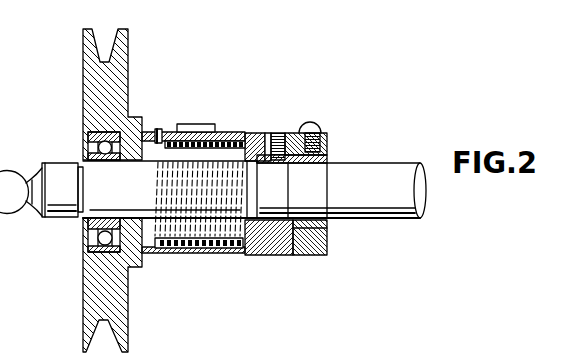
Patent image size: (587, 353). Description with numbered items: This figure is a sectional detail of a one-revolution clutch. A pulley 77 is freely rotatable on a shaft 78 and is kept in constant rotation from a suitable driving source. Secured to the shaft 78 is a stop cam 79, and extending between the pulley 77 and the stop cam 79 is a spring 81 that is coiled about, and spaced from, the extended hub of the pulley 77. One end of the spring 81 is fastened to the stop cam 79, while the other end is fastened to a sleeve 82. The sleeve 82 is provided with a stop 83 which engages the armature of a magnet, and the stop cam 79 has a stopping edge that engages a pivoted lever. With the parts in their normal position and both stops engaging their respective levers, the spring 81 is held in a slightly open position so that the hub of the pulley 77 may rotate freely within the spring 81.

The pulley 77 is at (124, 82).
The shaft 78 is at (378, 177).
The stop cam 79 is at (288, 132).
The spring 81 is at (224, 130).
The sleeve 82 is at (146, 132).
The stop 83 is at (197, 125).